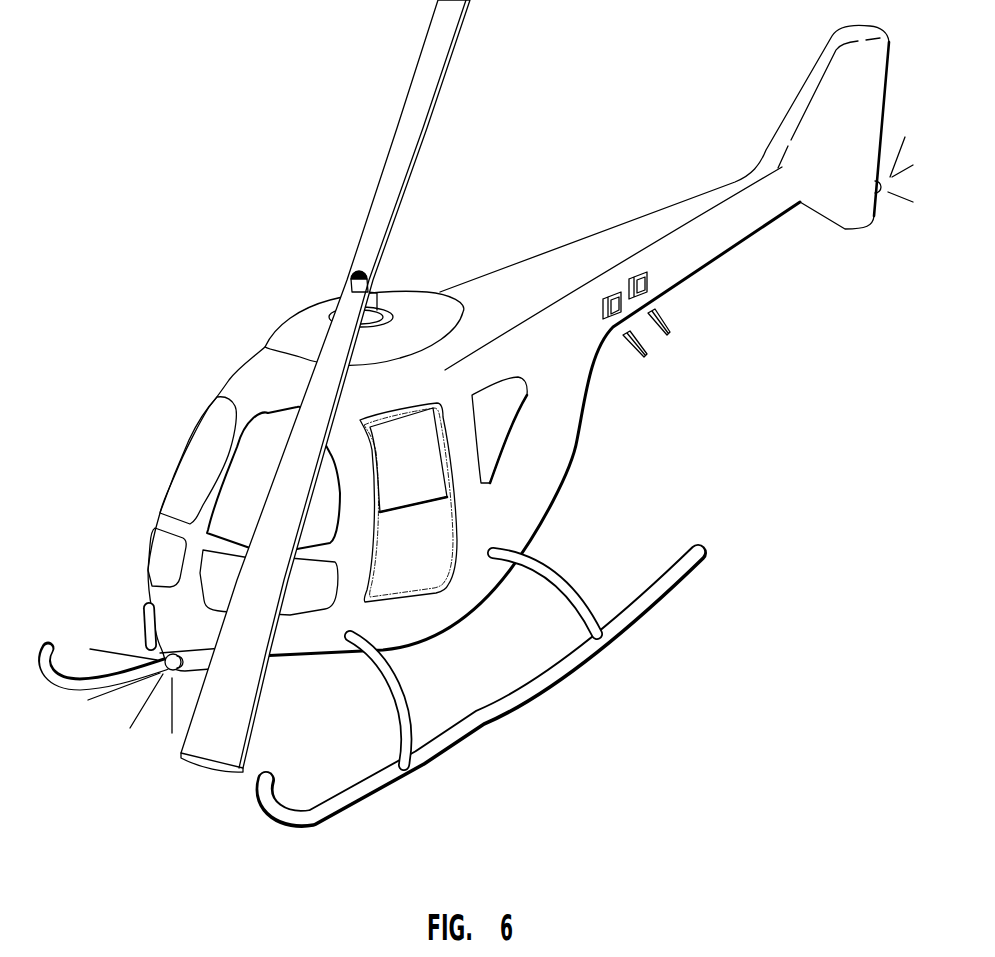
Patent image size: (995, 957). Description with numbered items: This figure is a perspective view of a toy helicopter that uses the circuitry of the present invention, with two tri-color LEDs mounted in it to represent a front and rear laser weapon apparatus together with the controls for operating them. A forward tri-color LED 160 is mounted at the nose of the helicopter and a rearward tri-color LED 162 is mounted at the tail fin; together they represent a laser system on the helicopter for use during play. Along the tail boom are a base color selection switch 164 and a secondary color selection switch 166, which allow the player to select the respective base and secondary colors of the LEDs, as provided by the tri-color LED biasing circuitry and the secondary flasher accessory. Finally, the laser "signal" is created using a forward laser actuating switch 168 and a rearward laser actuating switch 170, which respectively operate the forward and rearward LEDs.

The forward tri-color LED 160 is at (161, 672).
The rearward tri-color LED 162 is at (877, 194).
The base color selection switch 164 is at (637, 357).
The secondary color selection switch 166 is at (669, 334).
The forward laser actuating switch 168 is at (606, 290).
The rearward laser actuating switch 170 is at (633, 270).